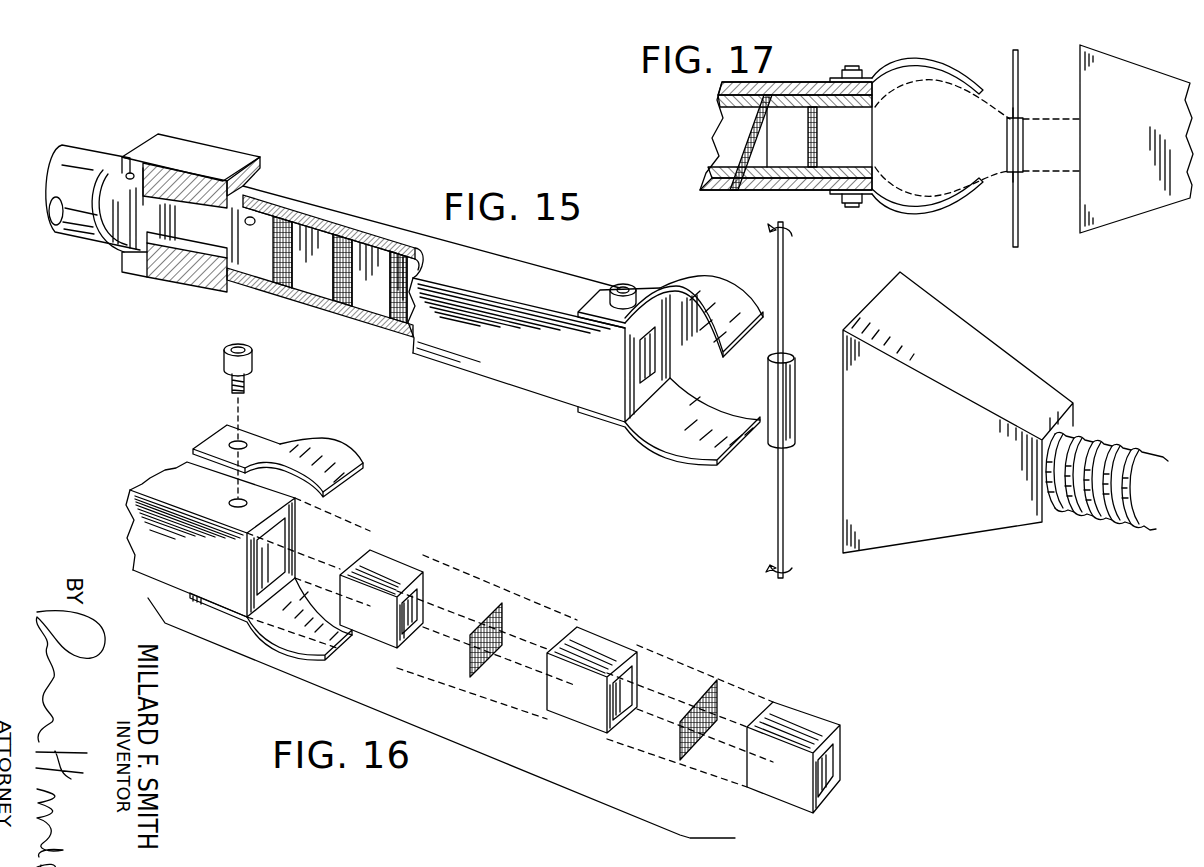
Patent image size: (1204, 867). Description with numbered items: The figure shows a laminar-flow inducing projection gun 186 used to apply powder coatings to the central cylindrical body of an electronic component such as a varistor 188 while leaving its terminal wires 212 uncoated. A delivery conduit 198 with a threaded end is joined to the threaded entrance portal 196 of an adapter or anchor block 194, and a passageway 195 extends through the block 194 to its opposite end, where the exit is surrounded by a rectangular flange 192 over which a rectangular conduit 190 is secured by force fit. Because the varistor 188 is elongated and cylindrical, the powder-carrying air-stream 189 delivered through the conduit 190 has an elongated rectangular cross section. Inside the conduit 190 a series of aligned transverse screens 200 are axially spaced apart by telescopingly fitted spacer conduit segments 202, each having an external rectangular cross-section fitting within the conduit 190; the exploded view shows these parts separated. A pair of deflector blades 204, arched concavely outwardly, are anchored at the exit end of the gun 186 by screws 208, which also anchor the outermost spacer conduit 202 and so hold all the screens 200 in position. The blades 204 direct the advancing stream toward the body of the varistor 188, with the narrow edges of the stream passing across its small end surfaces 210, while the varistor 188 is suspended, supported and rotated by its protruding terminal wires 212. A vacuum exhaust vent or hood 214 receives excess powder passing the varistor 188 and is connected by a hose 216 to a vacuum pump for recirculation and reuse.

In FIG. 15, the laminar-flow inducing projection gun 186 is at (326, 191).
In FIG. 15, the varistor 188 is at (770, 452).
In FIG. 17, the varistor 188 is at (1023, 148).
In FIG. 17, the powder-carrying air-stream 189 is at (957, 160).
In FIG. 15, the rectangular conduit 190 is at (557, 278).
In FIG. 16, the rectangular conduit 190 is at (295, 497).
In FIG. 17, the rectangular conduit 190 is at (752, 191).
In FIG. 15, the flange 192 is at (262, 218).
In FIG. 15, the adapter or anchor block 194 is at (207, 157).
In FIG. 15, the passageway 195 is at (197, 240).
In FIG. 15, the threaded entrance portal 196 is at (131, 156).
In FIG. 15, the delivery conduit 198 is at (83, 236).
In FIG. 15, the transverse screens 200 is at (343, 283).
In FIG. 16, the transverse screens 200 is at (501, 614).
In FIG. 17, the transverse screens 200 is at (819, 142).
In FIG. 15, the spacer conduit segments 202 is at (290, 290).
In FIG. 16, the spacer conduit segments 202 is at (390, 570).
In FIG. 17, the spacer conduit segments 202 is at (783, 100).
In FIG. 15, the deflector blades 204 is at (707, 295).
In FIG. 16, the deflector blades 204 is at (320, 447).
In FIG. 17, the deflector blades 204 is at (977, 86).
In FIG. 15, the screws 208 is at (633, 286).
In FIG. 16, the screws 208 is at (222, 365).
In FIG. 15, the small end surfaces 210 is at (790, 355).
In FIG. 17, the small end surfaces 210 is at (1022, 117).
In FIG. 15, the terminal wires 212 is at (798, 533).
In FIG. 17, the terminal wires 212 is at (1019, 64).
In FIG. 15, the vacuum exhaust vent or hood 214 is at (910, 437).
In FIG. 17, the vacuum exhaust vent or hood 214 is at (1127, 153).
In FIG. 15, the hose 216 is at (1083, 515).